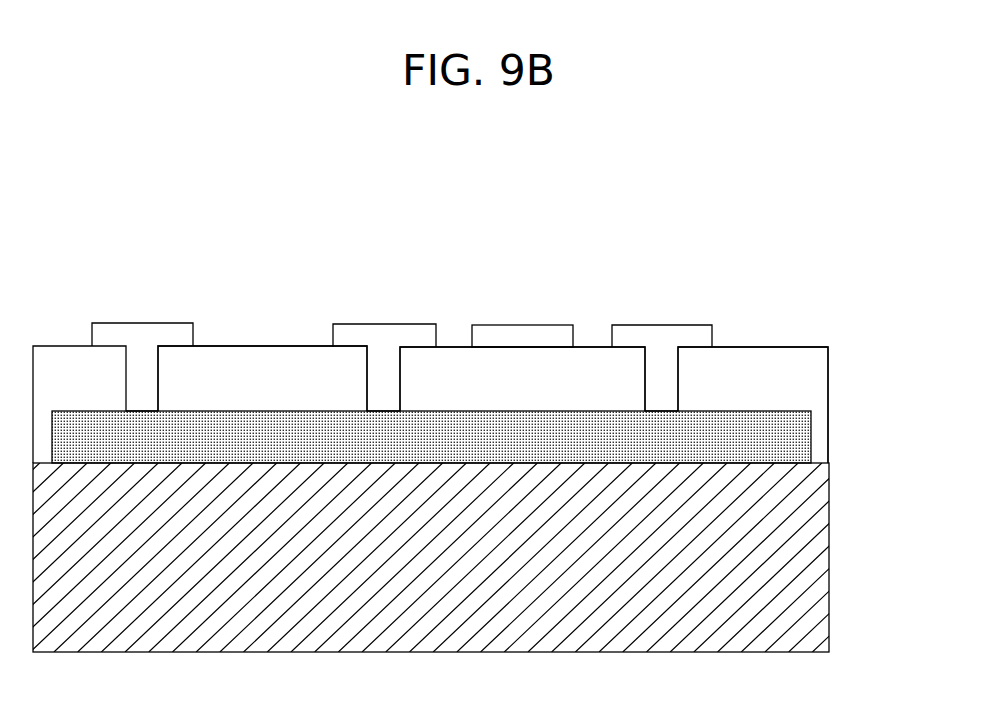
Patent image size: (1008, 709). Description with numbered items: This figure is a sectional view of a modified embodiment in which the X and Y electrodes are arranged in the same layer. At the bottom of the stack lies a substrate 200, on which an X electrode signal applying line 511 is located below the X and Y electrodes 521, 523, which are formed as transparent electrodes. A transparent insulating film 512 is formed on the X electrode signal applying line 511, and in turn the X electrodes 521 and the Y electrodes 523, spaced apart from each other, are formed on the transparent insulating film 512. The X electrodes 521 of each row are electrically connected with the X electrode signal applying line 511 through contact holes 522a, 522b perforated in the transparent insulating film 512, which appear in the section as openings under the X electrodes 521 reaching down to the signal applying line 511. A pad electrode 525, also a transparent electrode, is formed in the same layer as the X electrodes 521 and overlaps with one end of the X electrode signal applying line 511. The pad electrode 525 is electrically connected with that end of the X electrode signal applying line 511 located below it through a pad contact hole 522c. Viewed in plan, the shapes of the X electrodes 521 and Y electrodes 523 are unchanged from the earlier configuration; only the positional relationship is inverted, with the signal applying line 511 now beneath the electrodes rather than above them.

The substrate 200 is at (822, 603).
The X electrode signal applying line 511 is at (800, 443).
The transparent insulating film 512 is at (782, 355).
The X electrodes 521 is at (663, 343).
The contact hole 522a is at (393, 380).
The contact hole 522b is at (672, 377).
The pad contact hole 522c is at (150, 378).
The Y electrodes 523 is at (524, 337).
The pad electrode 525 is at (145, 338).